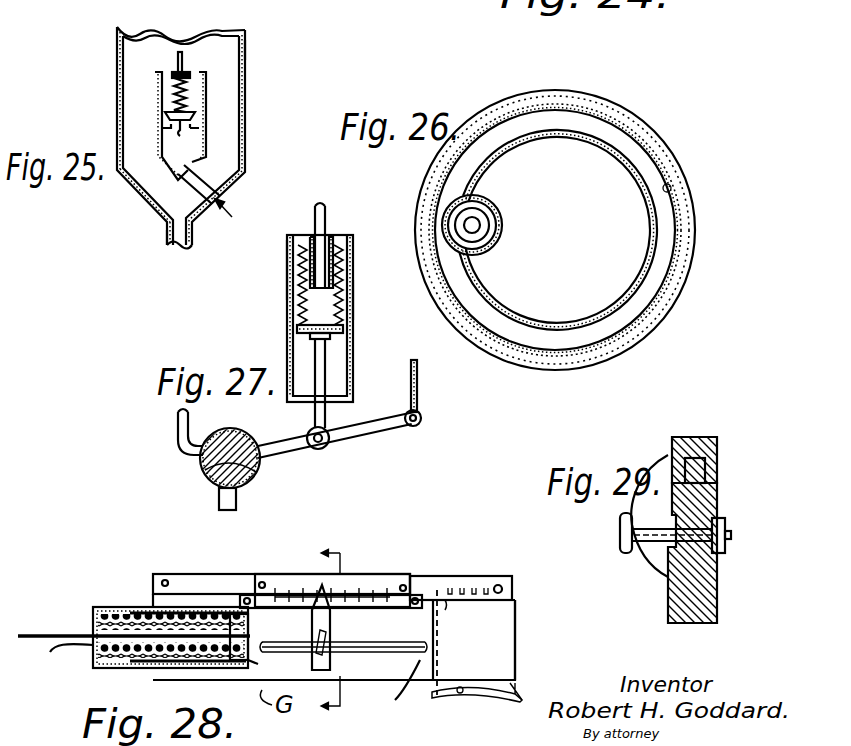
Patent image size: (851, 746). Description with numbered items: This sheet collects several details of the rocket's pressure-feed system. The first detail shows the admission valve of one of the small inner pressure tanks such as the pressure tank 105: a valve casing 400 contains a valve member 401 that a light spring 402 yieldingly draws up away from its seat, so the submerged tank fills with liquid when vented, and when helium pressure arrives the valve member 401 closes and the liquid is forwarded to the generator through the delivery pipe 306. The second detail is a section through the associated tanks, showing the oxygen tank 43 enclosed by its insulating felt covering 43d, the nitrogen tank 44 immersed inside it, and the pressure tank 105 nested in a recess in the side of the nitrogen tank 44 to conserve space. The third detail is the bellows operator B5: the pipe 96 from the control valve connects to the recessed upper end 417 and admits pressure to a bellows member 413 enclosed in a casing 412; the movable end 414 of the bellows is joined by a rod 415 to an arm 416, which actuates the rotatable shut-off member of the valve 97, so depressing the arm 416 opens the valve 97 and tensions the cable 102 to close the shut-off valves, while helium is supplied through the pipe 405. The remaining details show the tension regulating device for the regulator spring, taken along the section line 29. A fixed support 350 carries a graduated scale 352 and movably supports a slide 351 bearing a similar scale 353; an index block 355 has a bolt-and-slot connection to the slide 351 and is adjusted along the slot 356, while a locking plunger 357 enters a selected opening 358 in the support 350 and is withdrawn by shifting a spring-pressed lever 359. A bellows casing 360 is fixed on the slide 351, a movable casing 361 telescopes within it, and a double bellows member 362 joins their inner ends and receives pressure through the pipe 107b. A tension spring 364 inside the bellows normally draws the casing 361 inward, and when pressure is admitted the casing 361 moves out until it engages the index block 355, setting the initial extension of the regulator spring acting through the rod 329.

In FIG. 25, the small pressure tank 105 is at (246, 46).
In FIG. 26, the small pressure tank 105 is at (491, 247).
In FIG. 25, the valve casing 400 is at (196, 99).
In FIG. 26, the valve casing 400 is at (474, 226).
In FIG. 25, the light spring 402 is at (178, 98).
In FIG. 25, the valve member 401 is at (186, 138).
In FIG. 25, the delivery pipe 306 is at (167, 242).
In FIG. 26, the felt covering 43d is at (661, 139).
In FIG. 26, the oxygen tank 43 is at (672, 189).
In FIG. 26, the nitrogen tank 44 is at (652, 256).
In FIG. 27, the pipe 96 is at (326, 220).
In FIG. 27, the recessed upper end 417 is at (300, 263).
In FIG. 27, the bellows member 413 is at (333, 280).
In FIG. 27, the bellows operator B5 is at (354, 302).
In FIG. 27, the movable end 414 is at (320, 321).
In FIG. 27, the casing 412 is at (353, 356).
In FIG. 27, the rod 415 is at (318, 384).
In FIG. 27, the arm 416 is at (376, 436).
In FIG. 27, the cable 102 is at (418, 392).
In FIG. 27, the valve 97 is at (231, 455).
In FIG. 27, the pipe 405 is at (178, 443).
In FIG. 28, the graduated scale 352 is at (285, 578).
In FIG. 28, the section line 29— 29 is at (350, 630).
In FIG. 28, the fixed support 350 is at (447, 570).
In FIG. 29, the fixed support 350 is at (718, 446).
In FIG. 28, the bellows casing 360 is at (102, 607).
In FIG. 28, the double bellows member 362 is at (106, 668).
In FIG. 28, the rod 329 is at (134, 622).
In FIG. 28, the pipe 107b is at (72, 654).
In FIG. 28, the movable casing 361 is at (250, 626).
In FIG. 28, the tension spring 364 is at (258, 664).
In FIG. 28, the index block 355 is at (332, 662).
In FIG. 29, the index block 355 is at (648, 559).
In FIG. 28, the graduated scale 353 is at (350, 602).
In FIG. 28, the opening 358 is at (467, 615).
In FIG. 28, the locking plunger 357 is at (440, 650).
In FIG. 28, the slide 351 is at (506, 632).
In FIG. 29, the slide 351 is at (718, 493).
In FIG. 28, the spring-pressed lever 359 is at (468, 702).
In FIG. 28, the slot 356 is at (406, 693).
In FIG. 29, the slot 356 is at (688, 570).